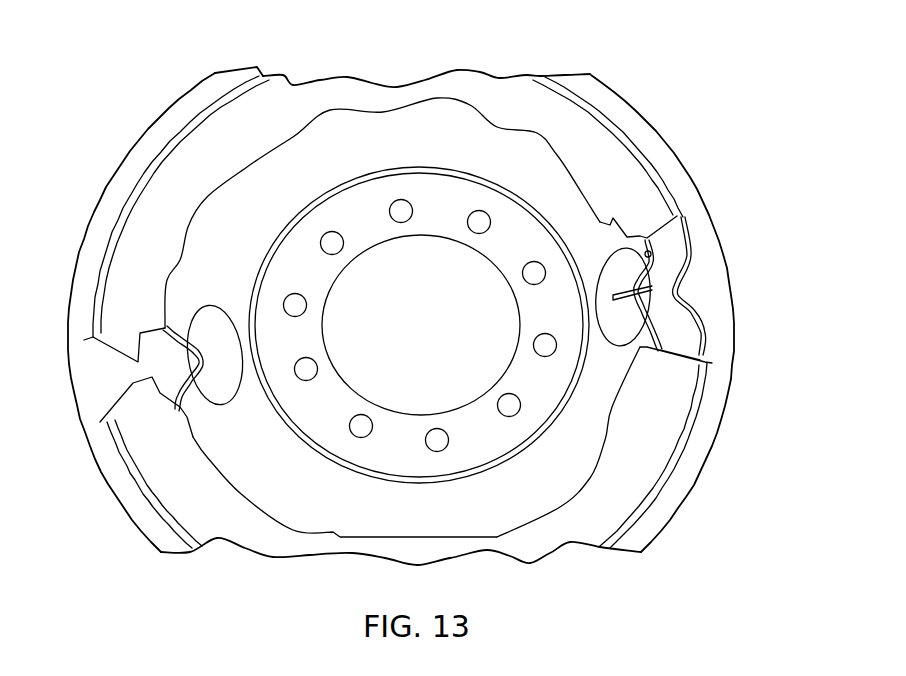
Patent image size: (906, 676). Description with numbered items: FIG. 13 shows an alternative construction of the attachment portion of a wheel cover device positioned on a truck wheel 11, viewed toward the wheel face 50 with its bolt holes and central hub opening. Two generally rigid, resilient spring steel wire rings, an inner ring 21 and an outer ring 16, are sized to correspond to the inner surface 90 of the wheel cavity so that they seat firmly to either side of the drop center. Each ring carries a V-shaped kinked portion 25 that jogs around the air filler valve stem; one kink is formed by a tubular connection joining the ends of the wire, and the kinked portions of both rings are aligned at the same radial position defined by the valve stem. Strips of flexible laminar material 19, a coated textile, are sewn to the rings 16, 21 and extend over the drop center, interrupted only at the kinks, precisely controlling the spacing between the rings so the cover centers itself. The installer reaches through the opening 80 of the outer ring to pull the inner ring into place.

The truck wheel 11 is at (553, 487).
The outer ring 16 is at (703, 353).
The flexible laminar material 19 is at (648, 190).
The inner ring 21 is at (655, 248).
The kinked portion 25 is at (180, 413).
The wheel face 50 is at (517, 228).
The opening of the outer ring 80 is at (205, 238).
The inner surface of the wheel 90 is at (668, 253).